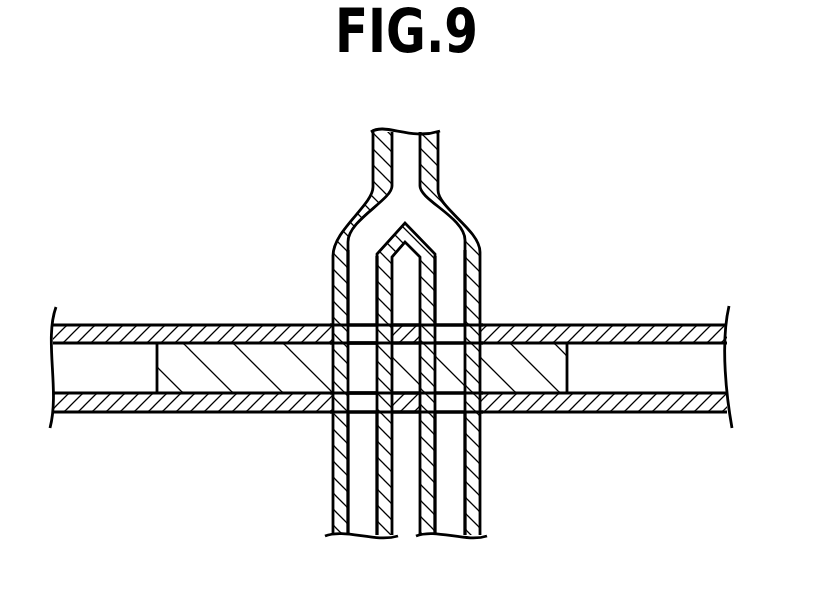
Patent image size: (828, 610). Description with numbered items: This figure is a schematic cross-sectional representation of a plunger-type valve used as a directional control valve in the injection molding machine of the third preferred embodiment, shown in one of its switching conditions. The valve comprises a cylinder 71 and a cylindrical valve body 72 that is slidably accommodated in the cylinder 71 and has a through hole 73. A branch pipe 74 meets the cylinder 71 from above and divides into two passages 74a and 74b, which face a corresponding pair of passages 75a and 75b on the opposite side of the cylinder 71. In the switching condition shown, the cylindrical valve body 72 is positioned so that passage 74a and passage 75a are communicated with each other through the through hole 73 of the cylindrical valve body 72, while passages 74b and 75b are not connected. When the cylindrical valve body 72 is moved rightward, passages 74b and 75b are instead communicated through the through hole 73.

The cylinder 71 is at (667, 324).
The cylindrical valve body 72 is at (538, 366).
The through hole 73 is at (355, 372).
The branch pipe 74 is at (403, 154).
The passage 74a is at (362, 273).
The passage 74b is at (452, 272).
The passage 75a is at (363, 500).
The passage 75b is at (450, 504).